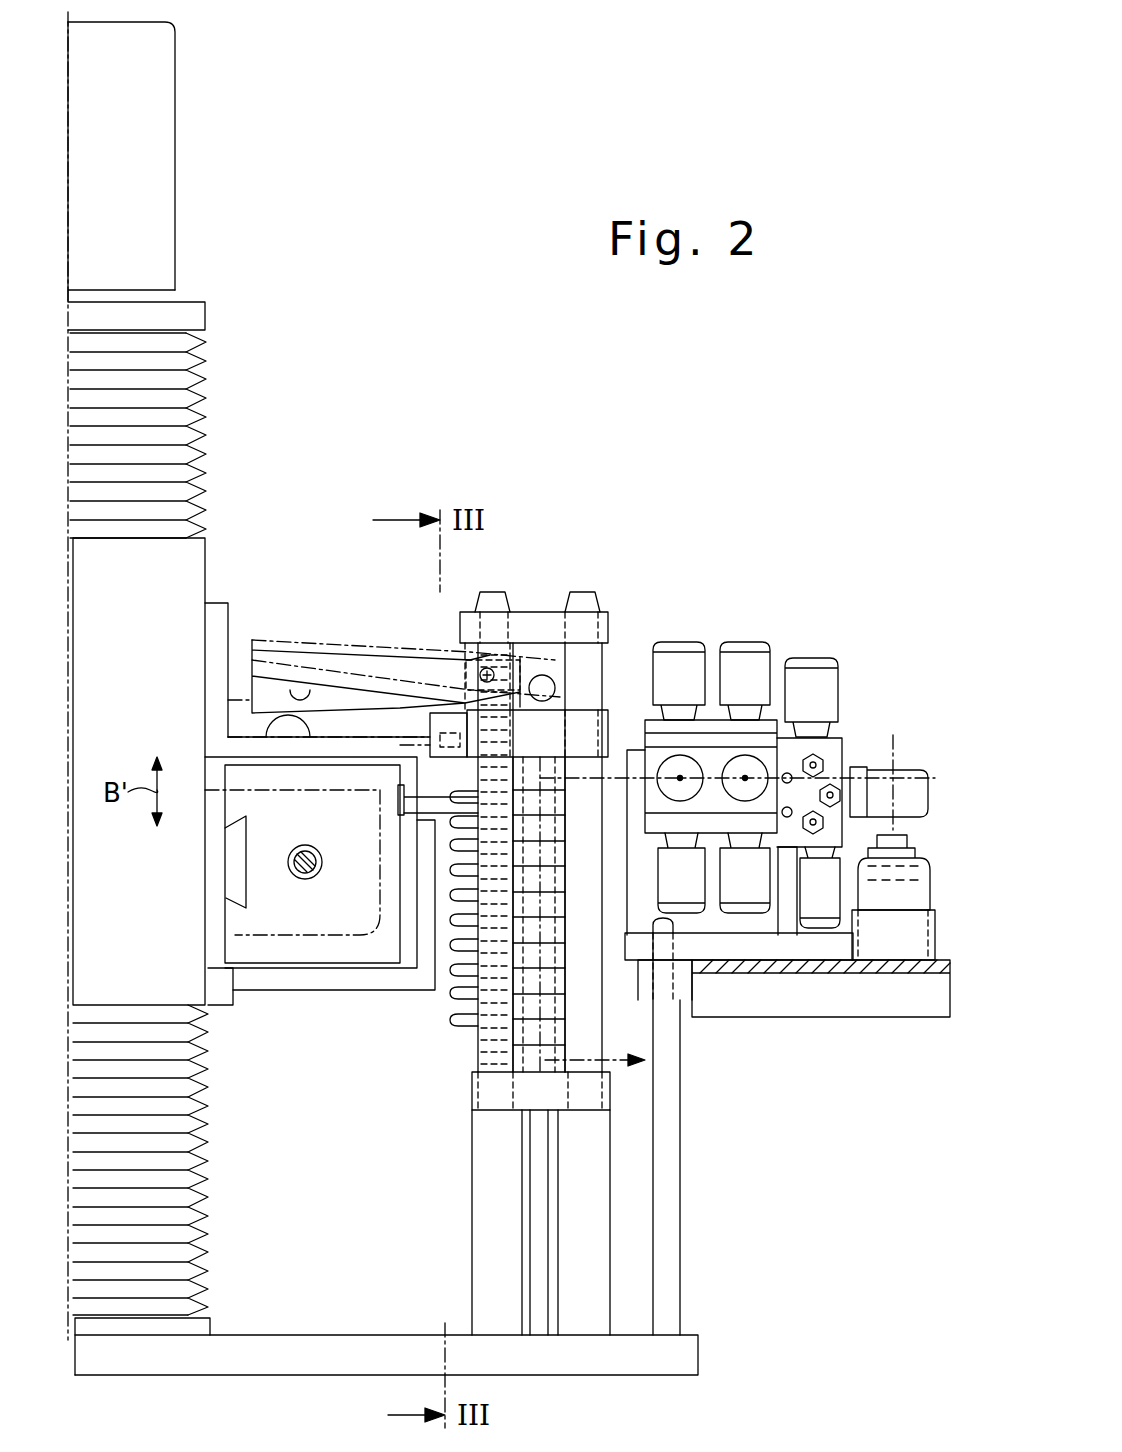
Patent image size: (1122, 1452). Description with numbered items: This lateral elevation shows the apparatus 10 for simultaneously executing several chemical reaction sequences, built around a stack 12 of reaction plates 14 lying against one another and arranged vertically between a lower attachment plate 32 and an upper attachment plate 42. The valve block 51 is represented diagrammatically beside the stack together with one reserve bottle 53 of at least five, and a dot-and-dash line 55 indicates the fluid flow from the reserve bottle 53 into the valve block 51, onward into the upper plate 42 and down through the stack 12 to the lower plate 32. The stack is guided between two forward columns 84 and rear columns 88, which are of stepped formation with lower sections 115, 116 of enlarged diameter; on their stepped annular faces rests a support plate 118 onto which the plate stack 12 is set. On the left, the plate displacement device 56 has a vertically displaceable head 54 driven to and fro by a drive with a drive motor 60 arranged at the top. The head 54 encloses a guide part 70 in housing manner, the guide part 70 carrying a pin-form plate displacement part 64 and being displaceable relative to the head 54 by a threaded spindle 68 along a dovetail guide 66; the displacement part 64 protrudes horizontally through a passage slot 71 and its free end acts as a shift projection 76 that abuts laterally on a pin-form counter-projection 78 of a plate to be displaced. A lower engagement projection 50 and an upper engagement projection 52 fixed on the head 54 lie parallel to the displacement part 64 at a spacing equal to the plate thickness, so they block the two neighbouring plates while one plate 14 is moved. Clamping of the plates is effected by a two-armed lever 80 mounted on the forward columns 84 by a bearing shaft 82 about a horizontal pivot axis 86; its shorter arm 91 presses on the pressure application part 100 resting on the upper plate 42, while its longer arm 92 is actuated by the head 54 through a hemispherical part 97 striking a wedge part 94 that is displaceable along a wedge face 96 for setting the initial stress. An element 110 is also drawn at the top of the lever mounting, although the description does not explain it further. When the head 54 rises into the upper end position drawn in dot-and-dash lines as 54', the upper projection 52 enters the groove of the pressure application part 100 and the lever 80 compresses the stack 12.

The apparatus 10 is at (556, 515).
The stack 12 is at (578, 980).
The reaction plates 14 is at (567, 955).
The lower attachment plate 32 is at (535, 1072).
The upper attachment plate 42 is at (535, 770).
The lower engagement projection 50 is at (447, 845).
The valve block 51 is at (727, 640).
The upper engagement projection 52 is at (448, 770).
The reserve bottle 53 is at (913, 890).
The head 54 is at (189, 795).
The upper end position of the head 54' is at (416, 625).
The dot-and-dash line 55 is at (893, 795).
The plate displacement device 56 is at (245, 590).
The drive motor 60 is at (172, 212).
The plate displacement part 64 is at (400, 803).
The dovetail guide 66 is at (240, 910).
The threaded spindle 68 is at (293, 873).
The guide part 70 is at (347, 950).
The passage slot 71 is at (400, 790).
The shift projection 76 is at (478, 826).
The counter-projection 78 is at (460, 980).
The two-armed lever 80 is at (362, 630).
The bearing shaft 82 is at (470, 662).
The forward columns 84 is at (480, 1048).
The horizontal pivot axis 86 is at (489, 668).
The rear columns 88 is at (593, 1033).
The arm 91 is at (556, 640).
The arm 92 is at (305, 672).
The wedge part 94 is at (253, 697).
The wedge face 96 is at (280, 670).
The hemispherical part 97 is at (290, 723).
The pressure application part 100 is at (588, 730).
The bolt 110 is at (463, 612).
The lower section 115 is at (472, 1165).
The lower section 116 is at (603, 1168).
The support plate 118 is at (610, 1087).